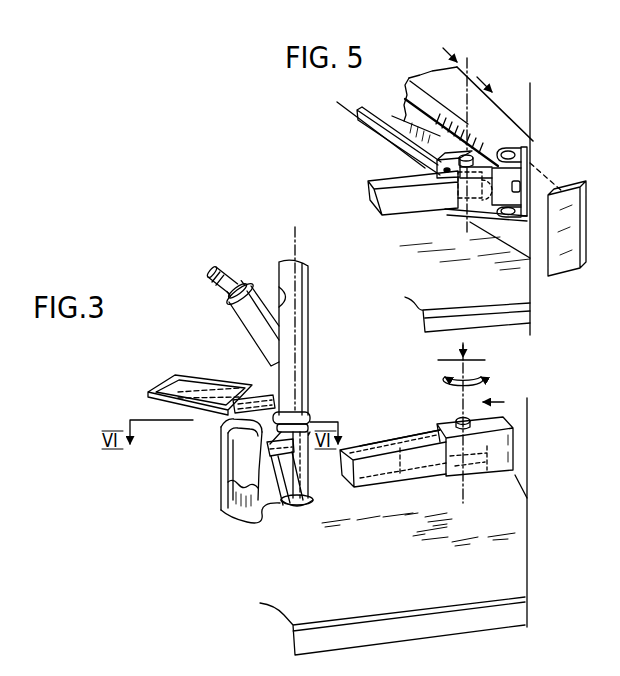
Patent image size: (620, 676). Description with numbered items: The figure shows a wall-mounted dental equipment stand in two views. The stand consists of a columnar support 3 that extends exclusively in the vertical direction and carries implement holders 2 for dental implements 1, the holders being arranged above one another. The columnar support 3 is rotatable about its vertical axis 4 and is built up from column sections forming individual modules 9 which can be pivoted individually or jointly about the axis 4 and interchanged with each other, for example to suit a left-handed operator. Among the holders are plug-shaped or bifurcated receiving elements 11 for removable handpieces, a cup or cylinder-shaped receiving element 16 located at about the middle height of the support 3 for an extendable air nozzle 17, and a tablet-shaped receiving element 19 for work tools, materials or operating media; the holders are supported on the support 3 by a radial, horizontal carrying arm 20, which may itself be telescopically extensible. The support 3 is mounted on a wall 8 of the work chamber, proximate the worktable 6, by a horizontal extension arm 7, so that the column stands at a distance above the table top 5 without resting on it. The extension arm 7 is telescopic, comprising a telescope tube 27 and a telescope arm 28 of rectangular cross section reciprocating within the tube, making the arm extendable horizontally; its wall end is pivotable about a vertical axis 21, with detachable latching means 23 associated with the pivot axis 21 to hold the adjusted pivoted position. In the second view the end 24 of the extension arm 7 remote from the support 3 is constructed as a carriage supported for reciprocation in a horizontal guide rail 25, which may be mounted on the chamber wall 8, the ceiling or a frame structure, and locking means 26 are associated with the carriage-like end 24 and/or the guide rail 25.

In FIG. 3, the implement 1 is at (236, 279).
In FIG. 3, the implement holder 2 is at (263, 296).
In FIG. 3, the columnar support 3 is at (312, 316).
In FIG. 3, the vertical axis 4 is at (293, 233).
In FIG. 3, the table top 5 is at (493, 572).
In FIG. 3, the worktable 6 is at (447, 633).
In FIG. 5, the extension arm 7 is at (436, 218).
In FIG. 3, the extension arm 7 is at (385, 489).
In FIG. 3, the wall 8 is at (515, 408).
In FIG. 3, the module 9 is at (310, 343).
In FIG. 3, the receiving element 11 is at (222, 428).
In FIG. 3, the cylinder-shaped receiving element 16 is at (240, 325).
In FIG. 3, the air nozzle 17 is at (213, 268).
In FIG. 3, the tablet-shaped receiving element 19 is at (176, 375).
In FIG. 3, the carrying arm 20 is at (258, 388).
In FIG. 5, the vertical axis 21 is at (469, 63).
In FIG. 3, the vertical axis 21 is at (464, 502).
In FIG. 5, the latching means 23 is at (467, 156).
In FIG. 3, the latching means 23 is at (460, 418).
In FIG. 5, the carriage-like end 24 is at (398, 143).
In FIG. 5, the guide rail 25 is at (526, 132).
In FIG. 5, the locking means 26 is at (436, 168).
In FIG. 3, the telescope tube 27 is at (373, 445).
In FIG. 3, the telescope arm 28 is at (341, 450).